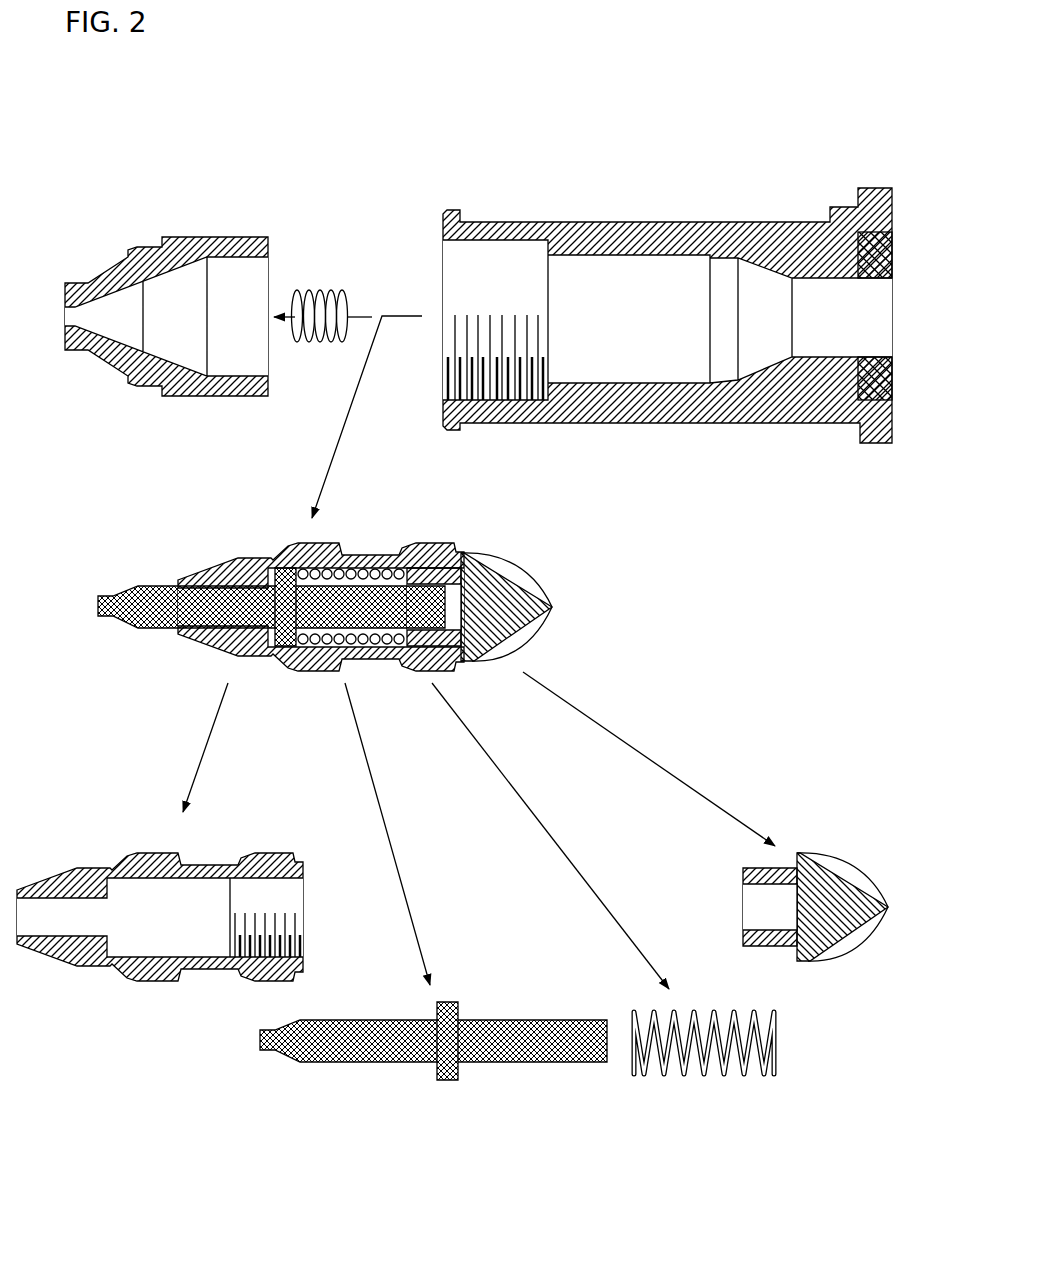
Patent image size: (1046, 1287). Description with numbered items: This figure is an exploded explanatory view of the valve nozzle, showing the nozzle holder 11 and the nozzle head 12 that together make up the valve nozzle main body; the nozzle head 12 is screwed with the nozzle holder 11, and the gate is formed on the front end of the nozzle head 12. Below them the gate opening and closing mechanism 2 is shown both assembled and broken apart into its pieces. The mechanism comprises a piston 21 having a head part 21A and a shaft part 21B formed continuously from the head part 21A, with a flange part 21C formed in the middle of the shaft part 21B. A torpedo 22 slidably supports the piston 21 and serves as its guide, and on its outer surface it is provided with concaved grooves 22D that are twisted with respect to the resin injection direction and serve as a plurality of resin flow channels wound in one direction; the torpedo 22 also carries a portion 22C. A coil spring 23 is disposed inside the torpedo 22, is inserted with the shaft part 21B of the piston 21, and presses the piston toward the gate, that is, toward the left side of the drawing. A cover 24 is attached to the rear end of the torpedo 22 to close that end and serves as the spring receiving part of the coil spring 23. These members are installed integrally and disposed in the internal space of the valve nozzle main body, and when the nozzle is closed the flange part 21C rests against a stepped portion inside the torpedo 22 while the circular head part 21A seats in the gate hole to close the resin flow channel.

The gate opening and closing mechanism 2 is at (552, 547).
The nozzle holder 11 is at (606, 222).
The nozzle head 12 is at (178, 240).
The piston 21 is at (486, 1097).
The head part 21A is at (262, 1056).
The shaft part 21B is at (537, 1015).
The flange part 21C is at (453, 1001).
The torpedo 22 is at (80, 975).
The body flange 22C is at (112, 881).
The concaved grooves 22D is at (112, 947).
The coil spring 23 is at (705, 1068).
The cover 24 is at (863, 926).